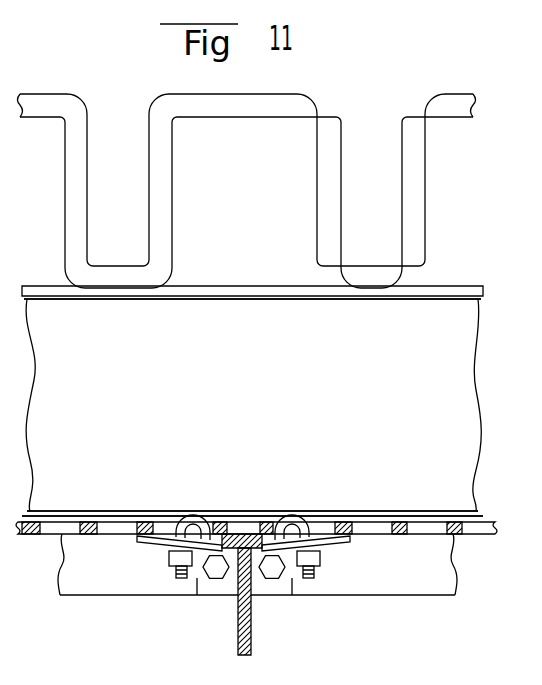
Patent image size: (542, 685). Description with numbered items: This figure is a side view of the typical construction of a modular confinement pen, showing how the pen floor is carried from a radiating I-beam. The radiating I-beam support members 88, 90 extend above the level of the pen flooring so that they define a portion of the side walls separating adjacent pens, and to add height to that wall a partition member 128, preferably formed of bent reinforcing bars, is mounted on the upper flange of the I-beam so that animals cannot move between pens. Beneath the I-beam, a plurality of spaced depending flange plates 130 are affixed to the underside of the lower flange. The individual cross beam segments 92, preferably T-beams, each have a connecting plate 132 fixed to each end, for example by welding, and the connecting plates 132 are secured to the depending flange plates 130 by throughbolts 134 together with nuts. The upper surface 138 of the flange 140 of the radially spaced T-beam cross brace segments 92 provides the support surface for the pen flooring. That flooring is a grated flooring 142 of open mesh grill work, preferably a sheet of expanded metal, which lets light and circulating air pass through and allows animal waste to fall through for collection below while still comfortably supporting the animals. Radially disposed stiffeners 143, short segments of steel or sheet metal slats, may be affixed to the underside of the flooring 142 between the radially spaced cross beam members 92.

The partition member 128 is at (417, 175).
The radiating I-beam support member 88 is at (225, 343).
The radiating I-beam support member 90 is at (225, 343).
The grated flooring 142 is at (88, 525).
The flange 140 is at (224, 525).
The upper surface 138 is at (247, 525).
The cross beam segment 92 is at (252, 614).
The stiffener 143 is at (152, 542).
The throughbolt 134 is at (204, 569).
The connecting plate 132 is at (225, 598).
The depending flange plate 130 is at (92, 580).